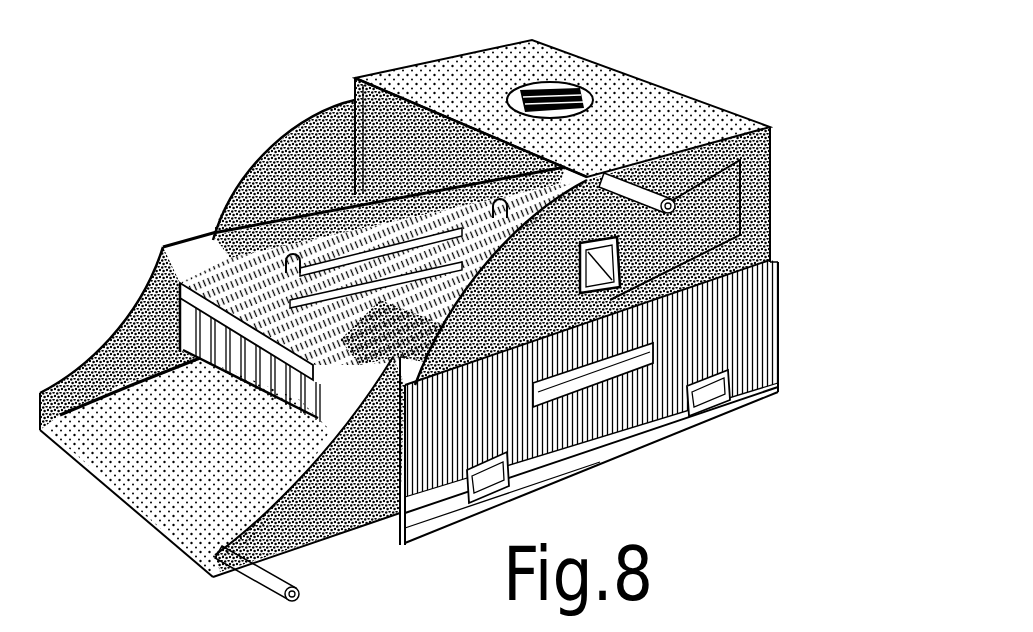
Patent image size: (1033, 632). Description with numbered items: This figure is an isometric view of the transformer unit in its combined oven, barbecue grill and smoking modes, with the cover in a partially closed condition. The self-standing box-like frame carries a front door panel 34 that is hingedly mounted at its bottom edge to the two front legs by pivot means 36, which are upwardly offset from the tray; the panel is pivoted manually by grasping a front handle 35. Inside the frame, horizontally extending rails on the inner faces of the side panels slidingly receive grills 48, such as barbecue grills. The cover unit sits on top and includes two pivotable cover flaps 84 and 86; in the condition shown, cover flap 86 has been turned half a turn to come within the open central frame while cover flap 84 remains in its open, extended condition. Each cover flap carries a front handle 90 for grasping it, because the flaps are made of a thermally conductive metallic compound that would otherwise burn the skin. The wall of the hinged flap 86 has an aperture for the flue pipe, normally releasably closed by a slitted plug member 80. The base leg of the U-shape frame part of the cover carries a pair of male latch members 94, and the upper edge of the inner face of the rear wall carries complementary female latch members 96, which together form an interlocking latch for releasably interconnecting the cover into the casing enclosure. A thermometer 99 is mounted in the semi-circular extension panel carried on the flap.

The front door panel 34 is at (567, 427).
The front handle 35 is at (660, 367).
The pivot means 36 is at (507, 480).
The grill 48 is at (268, 170).
The slitted plug member 80 is at (577, 77).
The cover flap 84 is at (110, 347).
The cover flap 86 is at (680, 117).
The front handle 90 is at (663, 162).
The male latch member 94 is at (465, 155).
The female latch member 96 is at (237, 213).
The thermometer 99 is at (585, 338).